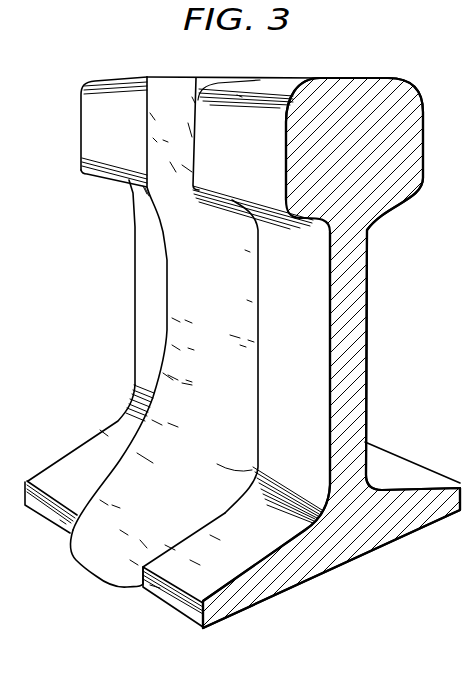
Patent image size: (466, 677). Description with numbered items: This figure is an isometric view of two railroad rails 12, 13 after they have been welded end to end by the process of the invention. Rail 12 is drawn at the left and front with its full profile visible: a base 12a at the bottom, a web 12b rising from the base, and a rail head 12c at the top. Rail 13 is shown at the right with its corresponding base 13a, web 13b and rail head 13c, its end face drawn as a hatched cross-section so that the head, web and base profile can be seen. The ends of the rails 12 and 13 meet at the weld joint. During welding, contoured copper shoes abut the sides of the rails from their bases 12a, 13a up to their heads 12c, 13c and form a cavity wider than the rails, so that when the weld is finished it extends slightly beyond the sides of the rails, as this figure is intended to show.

The rail 12 is at (173, 334).
The base of rail 12a is at (90, 442).
The web of rail 12b is at (140, 323).
The rail head 12c is at (117, 92).
The rail 13 is at (233, 341).
The base of rail 13a is at (413, 473).
The web of rail 13b is at (362, 356).
The rail head 13c is at (390, 86).